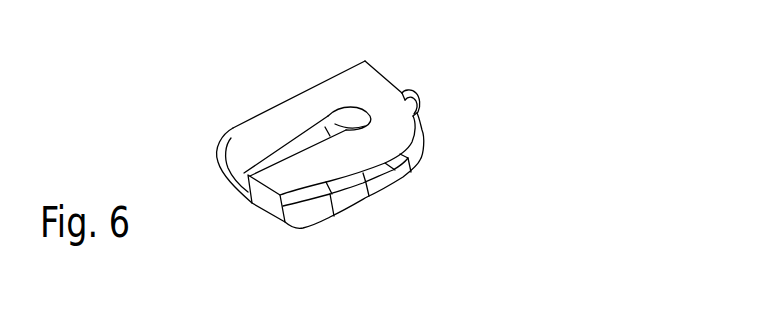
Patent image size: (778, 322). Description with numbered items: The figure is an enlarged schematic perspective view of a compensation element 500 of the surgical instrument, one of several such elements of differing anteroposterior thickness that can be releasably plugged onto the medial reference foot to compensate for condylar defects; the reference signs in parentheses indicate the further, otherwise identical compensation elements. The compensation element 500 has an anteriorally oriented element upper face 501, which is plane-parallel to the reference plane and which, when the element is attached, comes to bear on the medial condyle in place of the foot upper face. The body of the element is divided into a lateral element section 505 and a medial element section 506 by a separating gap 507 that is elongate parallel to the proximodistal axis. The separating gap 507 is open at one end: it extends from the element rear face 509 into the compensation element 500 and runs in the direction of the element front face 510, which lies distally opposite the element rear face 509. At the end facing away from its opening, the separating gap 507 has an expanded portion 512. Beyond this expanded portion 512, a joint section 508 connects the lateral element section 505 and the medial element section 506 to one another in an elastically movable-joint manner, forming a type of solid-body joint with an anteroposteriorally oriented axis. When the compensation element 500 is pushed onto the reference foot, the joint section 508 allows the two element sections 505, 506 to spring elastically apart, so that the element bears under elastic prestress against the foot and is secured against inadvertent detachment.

The compensation element 500 is at (428, 76).
The element upper face 501 is at (295, 112).
The lateral element section 505 is at (248, 140).
The medial element section 506 is at (323, 181).
The separating gap 507 is at (223, 164).
The joint section 508 is at (390, 93).
The element rear face 509 is at (260, 200).
The element front face 510 is at (422, 103).
The expanded portion 512 is at (340, 109).